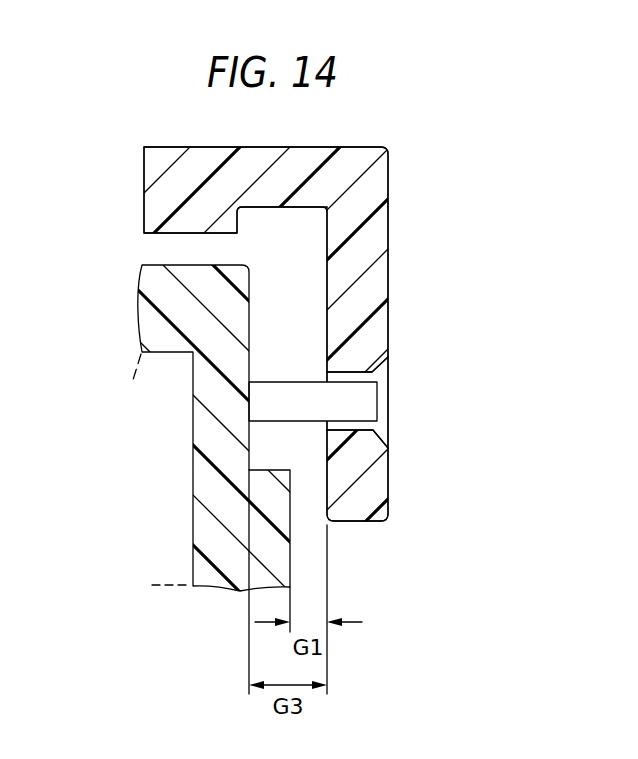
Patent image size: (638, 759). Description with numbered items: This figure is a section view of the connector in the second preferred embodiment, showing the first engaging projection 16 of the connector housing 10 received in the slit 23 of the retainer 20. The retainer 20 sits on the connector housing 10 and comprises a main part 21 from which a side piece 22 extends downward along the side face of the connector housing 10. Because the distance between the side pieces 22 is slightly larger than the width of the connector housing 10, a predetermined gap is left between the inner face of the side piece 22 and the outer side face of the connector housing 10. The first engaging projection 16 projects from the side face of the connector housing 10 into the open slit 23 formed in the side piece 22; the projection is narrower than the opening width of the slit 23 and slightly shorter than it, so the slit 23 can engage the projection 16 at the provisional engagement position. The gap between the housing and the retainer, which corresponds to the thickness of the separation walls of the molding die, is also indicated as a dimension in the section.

The connector housing 10 is at (320, 565).
The first engaging projection 16 is at (370, 393).
The retainer 20 is at (420, 178).
The main part 21 is at (178, 146).
The side piece 22 is at (388, 263).
The slit 23 is at (350, 432).